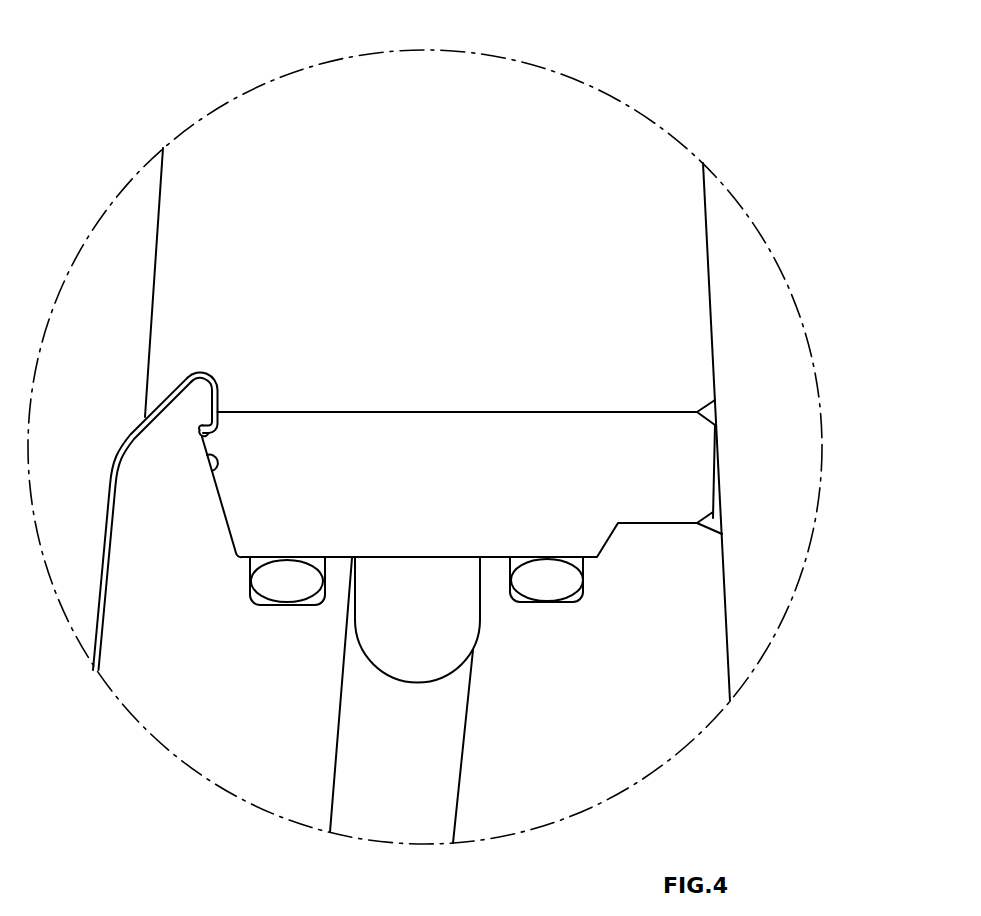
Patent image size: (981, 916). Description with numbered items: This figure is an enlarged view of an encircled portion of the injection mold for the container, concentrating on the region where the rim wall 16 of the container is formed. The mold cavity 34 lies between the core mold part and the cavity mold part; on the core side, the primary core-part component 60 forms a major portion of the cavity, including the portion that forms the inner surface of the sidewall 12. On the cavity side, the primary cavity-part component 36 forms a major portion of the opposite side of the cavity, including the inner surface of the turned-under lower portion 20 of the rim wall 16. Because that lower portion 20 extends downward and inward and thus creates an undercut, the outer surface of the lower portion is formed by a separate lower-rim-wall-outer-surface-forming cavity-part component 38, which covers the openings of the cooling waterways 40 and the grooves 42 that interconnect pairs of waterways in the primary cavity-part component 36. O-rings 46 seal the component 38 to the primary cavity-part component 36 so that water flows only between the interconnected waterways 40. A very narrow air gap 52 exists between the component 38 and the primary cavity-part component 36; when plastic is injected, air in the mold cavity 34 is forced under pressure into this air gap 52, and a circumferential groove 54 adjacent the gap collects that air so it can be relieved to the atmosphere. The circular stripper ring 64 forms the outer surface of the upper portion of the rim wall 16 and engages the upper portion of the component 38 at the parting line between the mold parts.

The sidewall 12 is at (172, 490).
The rim wall 16 is at (219, 392).
The lower portion of the rim wall 20 is at (214, 430).
The mold cavity 34 is at (110, 573).
The primary cavity-part component 36 is at (158, 715).
The lower-rim-wall-outer-surface-forming cavity-part component 38 is at (428, 501).
The waterway 40 is at (442, 773).
The groove 42 is at (452, 627).
The O-ring 46 is at (555, 587).
The air gap 52 is at (204, 438).
The circumferential groove 54 is at (208, 466).
The primary core-part component 60 is at (107, 248).
The circular stripper ring 64 is at (598, 120).